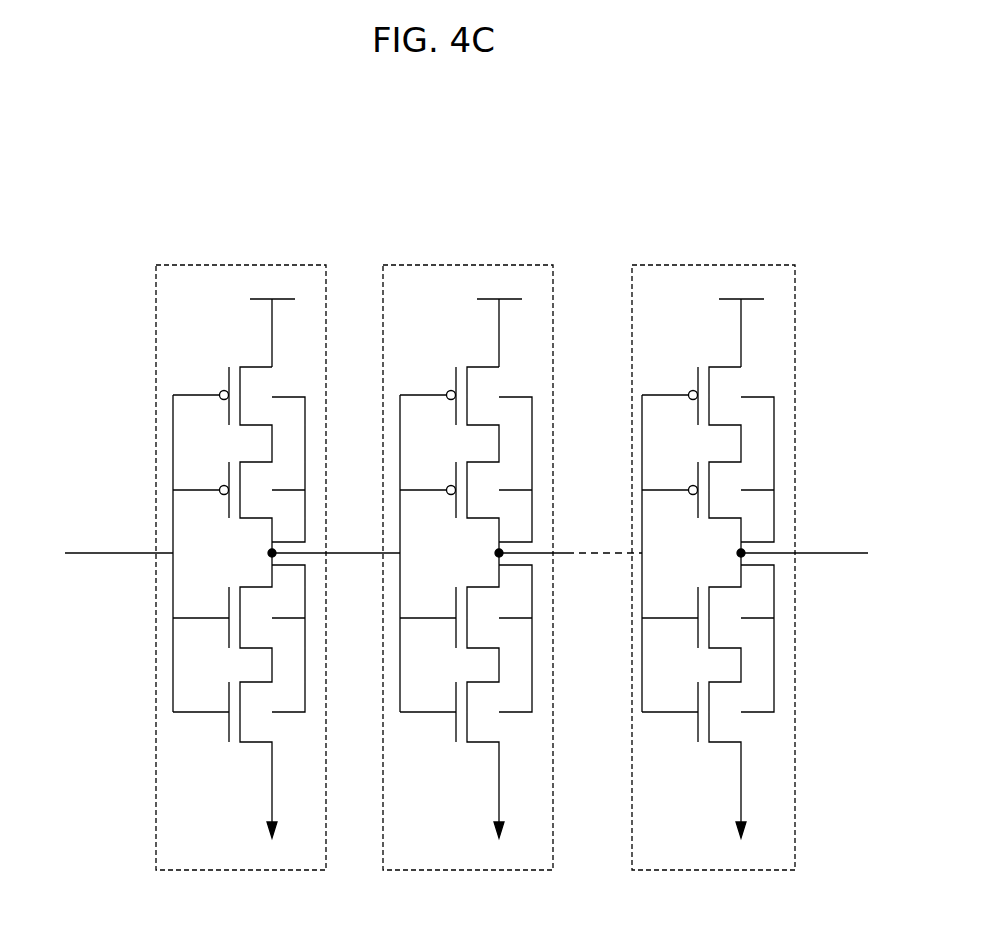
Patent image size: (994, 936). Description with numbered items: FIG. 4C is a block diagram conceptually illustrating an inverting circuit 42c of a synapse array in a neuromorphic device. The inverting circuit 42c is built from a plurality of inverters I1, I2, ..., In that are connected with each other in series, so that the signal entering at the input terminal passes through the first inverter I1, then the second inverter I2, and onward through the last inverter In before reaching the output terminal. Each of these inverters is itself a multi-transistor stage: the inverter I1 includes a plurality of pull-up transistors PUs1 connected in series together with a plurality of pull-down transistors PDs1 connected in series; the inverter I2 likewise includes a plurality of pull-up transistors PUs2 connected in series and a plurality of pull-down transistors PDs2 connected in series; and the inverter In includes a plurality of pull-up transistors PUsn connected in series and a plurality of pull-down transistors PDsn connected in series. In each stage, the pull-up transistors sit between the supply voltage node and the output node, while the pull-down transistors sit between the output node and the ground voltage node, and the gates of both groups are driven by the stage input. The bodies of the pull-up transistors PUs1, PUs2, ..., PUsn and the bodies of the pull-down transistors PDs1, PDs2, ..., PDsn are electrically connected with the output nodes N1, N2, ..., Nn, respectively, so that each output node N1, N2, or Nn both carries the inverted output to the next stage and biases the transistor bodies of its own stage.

The inverting circuit 42c is at (478, 218).
The inverter I1 is at (327, 305).
The inverter I2 is at (512, 567).
The inverter In is at (750, 567).
The pull-up transistors PUs1 is at (236, 340).
The pull-up transistors PUs2 is at (466, 423).
The pull-up transistors PUsn is at (708, 423).
The pull-down transistors PDs1 is at (232, 770).
The pull-down transistors PDs2 is at (466, 711).
The pull-down transistors PDsn is at (708, 711).
The output node N1 is at (323, 553).
The output node N2 is at (558, 553).
The output node Nn is at (792, 553).